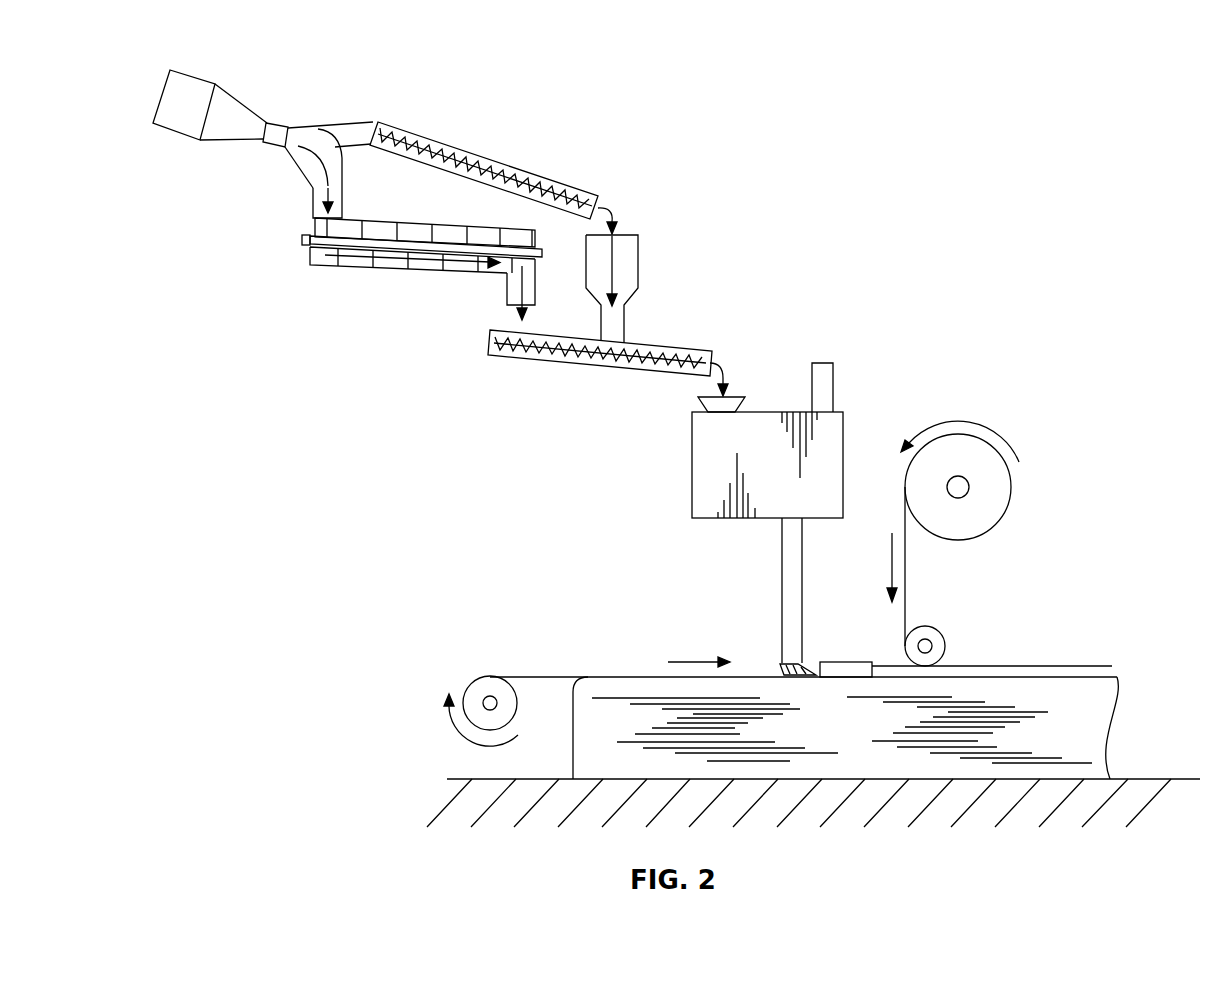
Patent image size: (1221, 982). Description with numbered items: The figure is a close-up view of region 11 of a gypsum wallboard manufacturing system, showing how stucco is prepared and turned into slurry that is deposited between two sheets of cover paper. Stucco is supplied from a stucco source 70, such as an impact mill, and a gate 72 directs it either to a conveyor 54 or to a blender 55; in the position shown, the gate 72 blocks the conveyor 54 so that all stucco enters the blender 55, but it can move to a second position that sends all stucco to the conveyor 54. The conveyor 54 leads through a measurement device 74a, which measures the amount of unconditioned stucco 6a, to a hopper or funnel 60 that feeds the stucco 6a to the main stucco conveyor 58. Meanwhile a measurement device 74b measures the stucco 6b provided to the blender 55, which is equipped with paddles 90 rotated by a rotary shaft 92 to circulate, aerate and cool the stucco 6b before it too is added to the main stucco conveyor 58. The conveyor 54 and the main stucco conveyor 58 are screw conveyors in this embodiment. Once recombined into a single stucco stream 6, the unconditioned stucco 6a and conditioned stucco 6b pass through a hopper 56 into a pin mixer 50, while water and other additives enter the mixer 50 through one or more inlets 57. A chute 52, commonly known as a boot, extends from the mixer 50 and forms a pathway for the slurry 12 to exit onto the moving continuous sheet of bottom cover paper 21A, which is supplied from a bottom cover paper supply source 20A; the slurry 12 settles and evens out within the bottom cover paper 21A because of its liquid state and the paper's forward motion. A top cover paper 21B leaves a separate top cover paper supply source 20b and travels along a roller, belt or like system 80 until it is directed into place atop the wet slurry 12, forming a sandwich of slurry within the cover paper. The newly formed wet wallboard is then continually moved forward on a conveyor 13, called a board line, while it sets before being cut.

The region 11 is at (1025, 158).
The stucco source 70 is at (172, 134).
The gate 72 is at (332, 131).
The conveyor 54 is at (501, 172).
The measurement device 74a is at (602, 207).
The stucco 6a is at (622, 234).
The funnel 60 is at (639, 259).
The paddles 90 is at (366, 227).
The rotary shaft 92 is at (302, 240).
The blender 55 is at (388, 268).
The stucco 6b is at (427, 262).
The measurement device 74b is at (537, 287).
The main stucco conveyor 58 is at (602, 370).
The stucco 6 is at (723, 370).
The hopper 56 is at (740, 402).
The inlets 57 is at (834, 368).
The mixer 50 is at (844, 422).
The chute 52 is at (803, 553).
The slurry 12 is at (803, 665).
The bottom cover paper supply source 20A is at (490, 702).
The bottom cover paper 21A is at (520, 676).
The conveyor 13 is at (1107, 673).
The top cover paper supply source 20b is at (1000, 498).
The top cover paper 21B is at (905, 573).
The conveyor system 80 is at (945, 647).